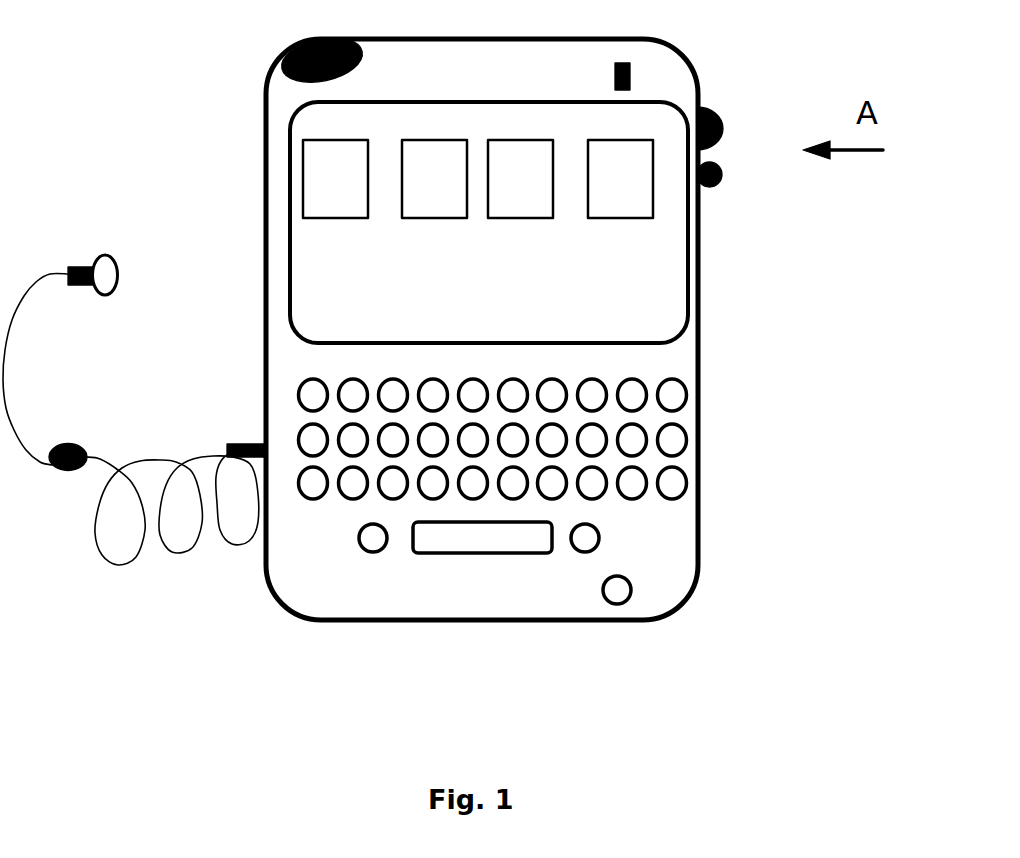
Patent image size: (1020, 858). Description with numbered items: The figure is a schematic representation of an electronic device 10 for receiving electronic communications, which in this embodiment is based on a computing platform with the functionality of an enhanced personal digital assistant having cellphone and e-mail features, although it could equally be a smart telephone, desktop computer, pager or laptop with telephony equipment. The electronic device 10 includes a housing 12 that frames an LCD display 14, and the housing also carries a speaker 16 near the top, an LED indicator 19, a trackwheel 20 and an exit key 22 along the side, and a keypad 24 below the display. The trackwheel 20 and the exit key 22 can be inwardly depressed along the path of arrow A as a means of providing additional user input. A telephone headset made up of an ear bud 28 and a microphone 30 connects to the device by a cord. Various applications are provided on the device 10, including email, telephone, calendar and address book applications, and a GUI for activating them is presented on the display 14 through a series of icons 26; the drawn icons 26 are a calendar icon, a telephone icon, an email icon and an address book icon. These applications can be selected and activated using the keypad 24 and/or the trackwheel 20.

The electronic device 10 is at (386, 621).
The housing 12 is at (543, 593).
The LCD display 14 is at (677, 268).
The speaker 16 is at (290, 53).
The LED indicator 19 is at (643, 78).
The trackwheel 20 is at (723, 128).
The exit key 22 is at (722, 175).
The keypad 24 is at (690, 437).
The icons 26 is at (480, 209).
The ear bud 28 is at (127, 253).
The microphone 30 is at (73, 443).